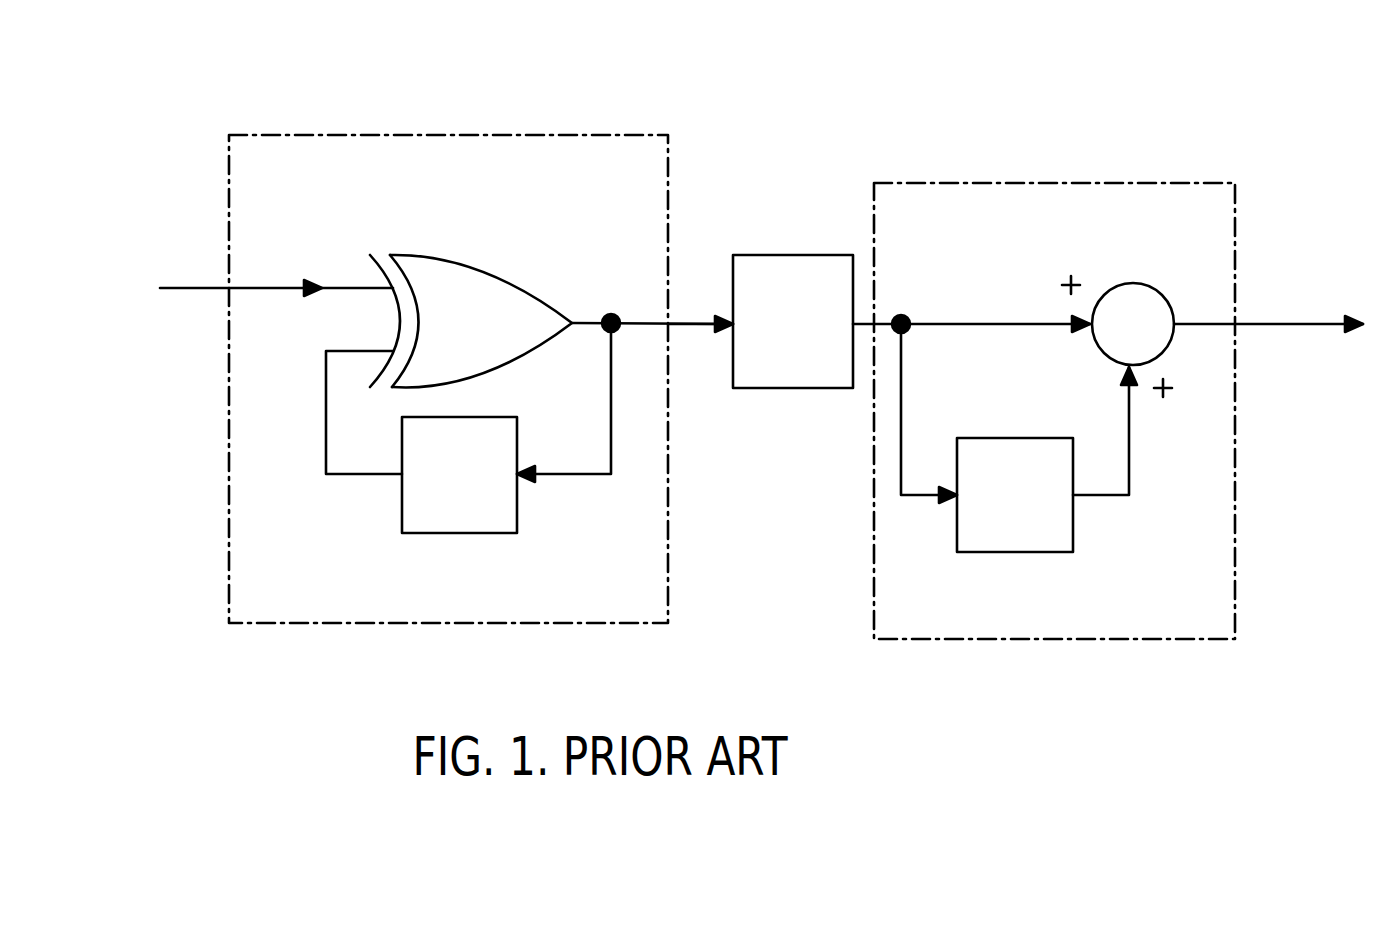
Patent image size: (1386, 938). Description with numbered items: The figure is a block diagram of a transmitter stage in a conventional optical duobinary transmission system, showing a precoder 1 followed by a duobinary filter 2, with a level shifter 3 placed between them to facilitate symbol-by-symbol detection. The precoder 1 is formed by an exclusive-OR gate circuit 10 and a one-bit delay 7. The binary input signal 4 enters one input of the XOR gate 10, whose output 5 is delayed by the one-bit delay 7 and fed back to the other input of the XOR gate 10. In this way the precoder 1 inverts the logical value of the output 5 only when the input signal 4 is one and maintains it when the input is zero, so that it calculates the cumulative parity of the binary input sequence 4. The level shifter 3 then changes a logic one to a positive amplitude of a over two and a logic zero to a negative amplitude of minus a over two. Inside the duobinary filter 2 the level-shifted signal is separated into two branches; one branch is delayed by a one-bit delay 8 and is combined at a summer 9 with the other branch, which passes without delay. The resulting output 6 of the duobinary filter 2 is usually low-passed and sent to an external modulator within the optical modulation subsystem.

The precoder 1 is at (243, 135).
The duobinary filter 2 is at (893, 181).
The level shifter 3 is at (768, 390).
The input signal 4 is at (162, 291).
The output 5 is at (696, 318).
The output 6 is at (1329, 324).
The one-bit delay 7 is at (517, 533).
The one-bit delay 8 is at (1073, 552).
The summer 9 is at (1134, 282).
The exclusive-OR gate circuit 10 is at (466, 267).